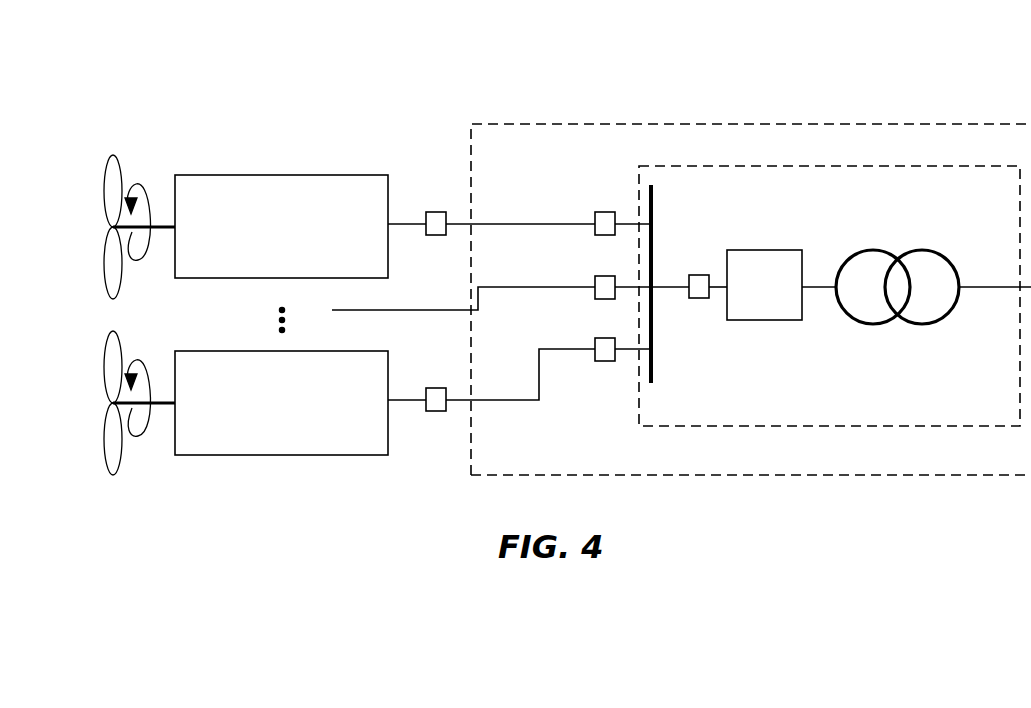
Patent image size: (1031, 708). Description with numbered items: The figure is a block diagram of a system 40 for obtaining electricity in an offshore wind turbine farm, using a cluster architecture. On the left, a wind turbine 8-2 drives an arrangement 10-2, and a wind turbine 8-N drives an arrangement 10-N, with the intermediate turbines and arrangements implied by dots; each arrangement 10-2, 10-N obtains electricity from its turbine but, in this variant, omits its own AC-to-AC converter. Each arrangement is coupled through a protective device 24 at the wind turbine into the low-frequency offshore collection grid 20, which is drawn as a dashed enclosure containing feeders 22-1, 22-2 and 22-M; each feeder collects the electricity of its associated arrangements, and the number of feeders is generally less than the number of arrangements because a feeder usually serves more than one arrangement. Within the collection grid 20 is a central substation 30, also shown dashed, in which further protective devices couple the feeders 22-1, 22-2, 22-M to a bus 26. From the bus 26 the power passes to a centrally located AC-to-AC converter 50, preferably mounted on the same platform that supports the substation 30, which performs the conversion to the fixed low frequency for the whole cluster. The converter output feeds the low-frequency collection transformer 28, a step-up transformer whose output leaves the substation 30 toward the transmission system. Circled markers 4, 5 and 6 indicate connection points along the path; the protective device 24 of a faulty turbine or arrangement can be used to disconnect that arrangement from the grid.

The system 40 is at (278, 82).
The wind turbine 8-2 is at (113, 227).
The wind turbine 8-N is at (113, 403).
The arrangement 10-2 is at (281, 226).
The arrangement 10-N is at (281, 403).
The connection point 4 is at (504, 293).
The protective device 24 is at (432, 236).
The feeder 22-1 is at (486, 224).
The feeder 22-2 is at (502, 287).
The feeder 22-M is at (502, 399).
The bus 26 is at (655, 361).
The low-frequency offshore collection grid 20 is at (751, 299).
The central substation 30 is at (829, 296).
The AC-to-AC converter 50 is at (745, 285).
The connection point 5 is at (819, 268).
The low-frequency collection transformer 28 is at (882, 324).
The point of interconnection 6 is at (995, 268).